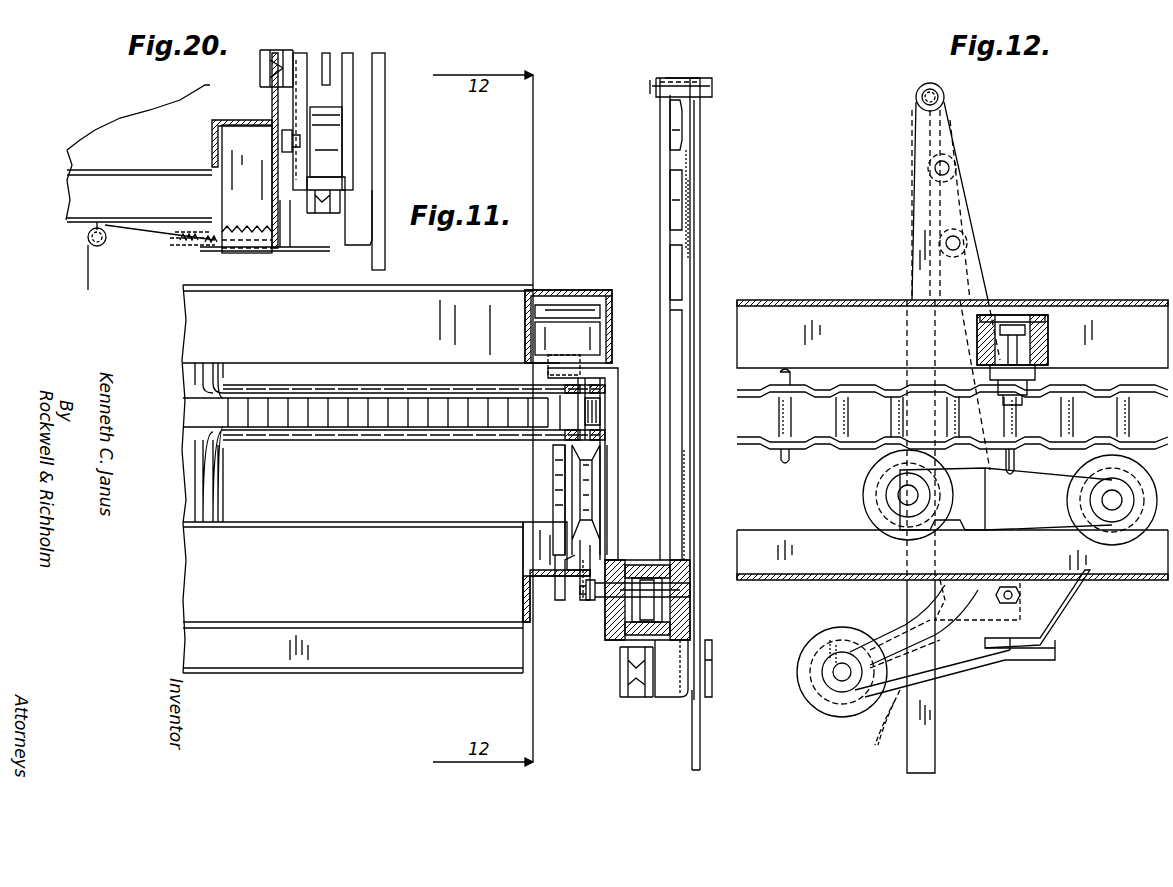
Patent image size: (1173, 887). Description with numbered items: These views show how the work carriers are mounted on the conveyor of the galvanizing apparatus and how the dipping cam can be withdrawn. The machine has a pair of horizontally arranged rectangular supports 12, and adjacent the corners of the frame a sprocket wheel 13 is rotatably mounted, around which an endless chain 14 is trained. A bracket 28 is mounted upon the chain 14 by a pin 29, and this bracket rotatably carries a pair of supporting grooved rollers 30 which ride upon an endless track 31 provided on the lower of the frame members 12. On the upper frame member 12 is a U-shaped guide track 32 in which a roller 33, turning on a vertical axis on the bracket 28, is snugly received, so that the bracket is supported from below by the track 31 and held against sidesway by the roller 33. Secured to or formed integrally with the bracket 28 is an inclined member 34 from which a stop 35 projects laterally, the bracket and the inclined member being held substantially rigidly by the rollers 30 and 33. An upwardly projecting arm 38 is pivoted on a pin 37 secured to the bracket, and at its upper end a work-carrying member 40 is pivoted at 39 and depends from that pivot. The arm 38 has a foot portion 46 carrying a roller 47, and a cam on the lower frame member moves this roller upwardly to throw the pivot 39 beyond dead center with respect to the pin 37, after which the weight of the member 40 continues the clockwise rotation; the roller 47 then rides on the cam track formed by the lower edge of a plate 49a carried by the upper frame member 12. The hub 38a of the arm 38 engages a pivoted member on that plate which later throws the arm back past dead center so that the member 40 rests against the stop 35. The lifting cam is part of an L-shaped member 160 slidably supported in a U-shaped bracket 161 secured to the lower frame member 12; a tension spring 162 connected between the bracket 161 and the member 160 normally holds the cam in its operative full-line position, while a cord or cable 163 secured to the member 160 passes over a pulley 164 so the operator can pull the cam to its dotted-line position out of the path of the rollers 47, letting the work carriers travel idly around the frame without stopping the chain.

In FIG. 20, the horizontally arranged supports 12 is at (258, 120).
In FIG. 11, the horizontally arranged supports 12 is at (553, 290).
In FIG. 12, the horizontally arranged supports 12 is at (1085, 300).
In FIG. 11, the sprocket wheel 13 is at (325, 415).
In FIG. 11, the endless chain 14 is at (445, 432).
In FIG. 12, the endless chain 14 is at (783, 440).
In FIG. 11, the bracket 28 is at (614, 418).
In FIG. 12, the bracket 28 is at (1060, 615).
In FIG. 11, the pin 29 is at (575, 412).
In FIG. 12, the pin 29 is at (781, 416).
In FIG. 20, the supporting grooved rollers 30 is at (280, 50).
In FIG. 11, the supporting grooved rollers 30 is at (596, 490).
In FIG. 12, the supporting grooved rollers 30 is at (866, 487).
In FIG. 11, the endless track 31 is at (585, 600).
In FIG. 12, the endless track 31 is at (858, 556).
In FIG. 11, the guide track 32 is at (603, 290).
In FIG. 12, the guide track 32 is at (1135, 352).
In FIG. 11, the roller 33 is at (575, 348).
In FIG. 12, the roller 33 is at (1048, 345).
In FIG. 20, the inclined member 34 is at (358, 245).
In FIG. 11, the inclined member 34 is at (670, 700).
In FIG. 12, the inclined member 34 is at (950, 672).
In FIG. 11, the stop 35 is at (712, 697).
In FIG. 12, the stop 35 is at (885, 728).
In FIG. 20, the pin 37 is at (282, 138).
In FIG. 11, the pin 37 is at (690, 595).
In FIG. 12, the pin 37 is at (1012, 585).
In FIG. 20, the upwardly projecting arm 38 is at (350, 62).
In FIG. 11, the upwardly projecting arm 38 is at (665, 195).
In FIG. 12, the upwardly projecting arm 38 is at (975, 255).
In FIG. 11, the hub 38a is at (635, 560).
In FIG. 11, the pivot 39 is at (712, 90).
In FIG. 12, the pivot 39 is at (916, 98).
In FIG. 20, the work-carrying member 40 is at (385, 112).
In FIG. 11, the work-carrying member 40 is at (698, 295).
In FIG. 12, the work-carrying member 40 is at (935, 738).
In FIG. 12, the foot portion 46 is at (895, 635).
In FIG. 20, the roller 47 is at (340, 185).
In FIG. 11, the roller 47 is at (635, 700).
In FIG. 12, the roller 47 is at (835, 712).
In FIG. 20, the plate 49a is at (330, 60).
In FIG. 20, the L-shaped member 160 is at (320, 251).
In FIG. 20, the U-shaped bracket 161 is at (222, 186).
In FIG. 20, the tension spring 162 is at (205, 248).
In FIG. 20, the cord or cable 163 is at (135, 240).
In FIG. 20, the pulley 164 is at (90, 245).